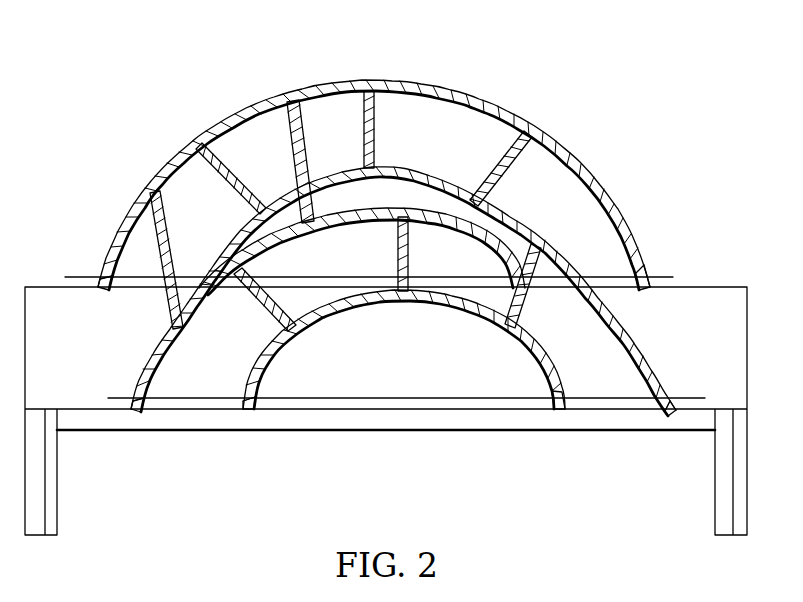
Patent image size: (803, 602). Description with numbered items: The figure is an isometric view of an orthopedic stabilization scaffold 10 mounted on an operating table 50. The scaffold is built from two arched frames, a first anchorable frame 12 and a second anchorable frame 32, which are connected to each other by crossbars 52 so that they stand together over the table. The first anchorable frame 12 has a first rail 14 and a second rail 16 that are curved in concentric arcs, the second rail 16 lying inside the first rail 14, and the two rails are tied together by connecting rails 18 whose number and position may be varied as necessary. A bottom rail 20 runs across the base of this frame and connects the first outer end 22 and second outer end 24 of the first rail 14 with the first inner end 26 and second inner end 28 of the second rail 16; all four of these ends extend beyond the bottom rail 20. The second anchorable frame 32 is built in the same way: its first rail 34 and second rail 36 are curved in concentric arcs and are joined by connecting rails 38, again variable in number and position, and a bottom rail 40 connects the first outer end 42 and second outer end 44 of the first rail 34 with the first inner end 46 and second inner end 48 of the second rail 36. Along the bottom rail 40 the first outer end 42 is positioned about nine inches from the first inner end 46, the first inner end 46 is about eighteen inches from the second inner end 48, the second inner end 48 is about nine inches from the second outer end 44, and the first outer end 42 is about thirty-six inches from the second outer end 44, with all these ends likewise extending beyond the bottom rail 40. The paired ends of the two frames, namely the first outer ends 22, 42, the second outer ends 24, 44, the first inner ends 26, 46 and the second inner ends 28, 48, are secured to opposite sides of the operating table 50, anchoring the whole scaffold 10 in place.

The orthopedic stabilization scaffold 10 is at (184, 72).
The first anchorable frame 12 is at (383, 280).
The first rail 14 is at (143, 370).
The second rail 16 is at (404, 323).
The connecting rails 18 is at (396, 250).
The bottom rail 20 is at (390, 402).
The first outer end 22 is at (133, 412).
The second outer end 24 is at (678, 413).
The first inner end 26 is at (244, 412).
The second inner end 28 is at (564, 412).
The second anchorable frame 32 is at (391, 185).
The first rail 34 is at (518, 120).
The second rail 36 is at (383, 280).
The connecting rails 38 is at (244, 183).
The bottom rail 40 is at (427, 287).
The first outer end 42 is at (102, 296).
The second outer end 44 is at (650, 290).
The first inner end 46 is at (352, 251).
The second inner end 48 is at (513, 277).
The operating table 50 is at (748, 337).
The crossbars 52 is at (299, 129).